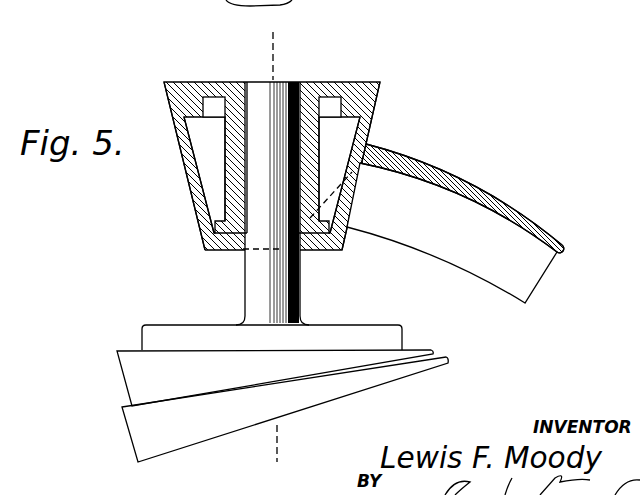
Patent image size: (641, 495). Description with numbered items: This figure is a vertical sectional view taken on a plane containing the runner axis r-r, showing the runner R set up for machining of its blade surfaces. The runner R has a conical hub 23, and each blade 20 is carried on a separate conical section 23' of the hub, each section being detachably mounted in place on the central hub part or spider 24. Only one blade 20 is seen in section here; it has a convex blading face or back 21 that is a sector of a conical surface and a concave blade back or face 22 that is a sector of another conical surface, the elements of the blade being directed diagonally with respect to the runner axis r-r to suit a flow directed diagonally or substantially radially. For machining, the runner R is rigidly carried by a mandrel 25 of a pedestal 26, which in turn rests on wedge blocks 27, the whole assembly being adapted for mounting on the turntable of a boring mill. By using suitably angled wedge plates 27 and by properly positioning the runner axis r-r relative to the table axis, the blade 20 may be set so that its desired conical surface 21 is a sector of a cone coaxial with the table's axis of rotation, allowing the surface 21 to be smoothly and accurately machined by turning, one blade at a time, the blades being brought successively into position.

The runner blade 20 is at (566, 258).
The convex blading face or back 21 is at (517, 213).
The concave blade back or face 22 is at (452, 233).
The conical hub 23 is at (272, 144).
The conical hub section 23' is at (292, 166).
The central hub part or spider 24 is at (238, 96).
The mandrel 25 is at (274, 286).
The pedestal 26 is at (193, 330).
The wedge blocks 27 is at (282, 406).
The runner R is at (440, 173).
The runner axis r is at (274, 249).